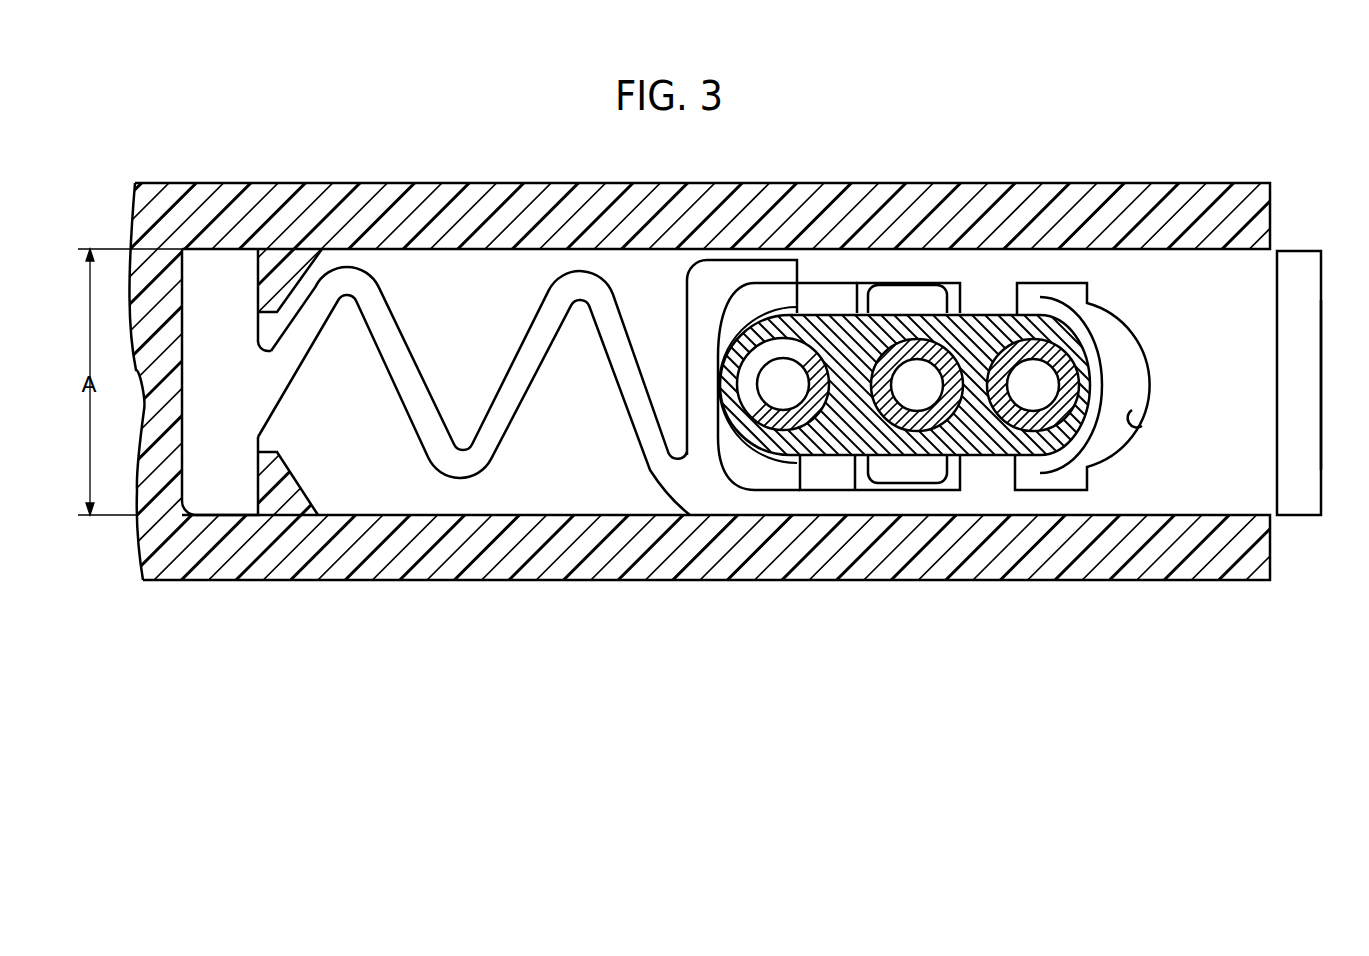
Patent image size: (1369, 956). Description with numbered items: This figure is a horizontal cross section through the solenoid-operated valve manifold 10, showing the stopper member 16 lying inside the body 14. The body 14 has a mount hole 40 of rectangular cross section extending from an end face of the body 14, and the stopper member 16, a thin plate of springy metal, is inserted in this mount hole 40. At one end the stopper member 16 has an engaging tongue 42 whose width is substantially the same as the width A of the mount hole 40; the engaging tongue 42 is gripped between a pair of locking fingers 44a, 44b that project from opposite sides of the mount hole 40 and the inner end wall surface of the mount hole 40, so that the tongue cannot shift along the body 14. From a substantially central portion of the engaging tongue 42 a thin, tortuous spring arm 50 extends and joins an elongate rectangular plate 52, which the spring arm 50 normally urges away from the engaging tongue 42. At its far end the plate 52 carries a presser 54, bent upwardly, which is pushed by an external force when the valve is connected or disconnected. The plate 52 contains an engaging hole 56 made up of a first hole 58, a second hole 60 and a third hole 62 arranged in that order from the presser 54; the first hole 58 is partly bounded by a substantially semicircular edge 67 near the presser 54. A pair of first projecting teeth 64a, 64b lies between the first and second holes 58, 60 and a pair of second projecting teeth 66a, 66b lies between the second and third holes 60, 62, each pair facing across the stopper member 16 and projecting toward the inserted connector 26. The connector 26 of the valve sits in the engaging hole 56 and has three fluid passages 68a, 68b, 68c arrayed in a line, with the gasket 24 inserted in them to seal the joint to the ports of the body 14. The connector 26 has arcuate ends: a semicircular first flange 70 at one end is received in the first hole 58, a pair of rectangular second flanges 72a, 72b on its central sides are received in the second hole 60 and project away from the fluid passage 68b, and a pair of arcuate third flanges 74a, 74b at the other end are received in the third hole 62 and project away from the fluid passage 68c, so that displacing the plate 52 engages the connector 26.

The solenoid-operated valve manifold 10 is at (228, 137).
The body 14 is at (1214, 186).
The stopper member 16 is at (1321, 430).
The gasket 24 is at (1062, 407).
The connector 26 is at (977, 330).
The mount hole 40 is at (420, 251).
The engaging tongue 42 is at (220, 495).
The locking finger 44a is at (275, 273).
The locking finger 44b is at (280, 490).
The spring arm 50 is at (498, 417).
The plate 52 is at (1209, 496).
The presser 54 is at (1303, 265).
The engaging hole 56 is at (1114, 341).
The first hole 58 is at (1065, 290).
The second hole 60 is at (869, 313).
The third hole 62 is at (742, 300).
The first projecting tooth 64a is at (990, 303).
The first projecting tooth 64b is at (988, 478).
The second projecting tooth 66a is at (833, 297).
The second projecting tooth 66b is at (818, 475).
The semicircular edge 67 is at (1137, 422).
The fluid passage 68a is at (1033, 395).
The fluid passage 68b is at (917, 395).
The fluid passage 68c is at (787, 395).
The first flange 70 is at (1103, 357).
The second flange 72a is at (903, 300).
The second flange 72b is at (905, 470).
The third flange 74a is at (775, 303).
The third flange 74b is at (772, 465).